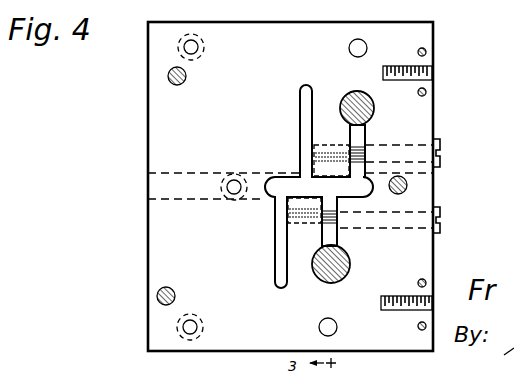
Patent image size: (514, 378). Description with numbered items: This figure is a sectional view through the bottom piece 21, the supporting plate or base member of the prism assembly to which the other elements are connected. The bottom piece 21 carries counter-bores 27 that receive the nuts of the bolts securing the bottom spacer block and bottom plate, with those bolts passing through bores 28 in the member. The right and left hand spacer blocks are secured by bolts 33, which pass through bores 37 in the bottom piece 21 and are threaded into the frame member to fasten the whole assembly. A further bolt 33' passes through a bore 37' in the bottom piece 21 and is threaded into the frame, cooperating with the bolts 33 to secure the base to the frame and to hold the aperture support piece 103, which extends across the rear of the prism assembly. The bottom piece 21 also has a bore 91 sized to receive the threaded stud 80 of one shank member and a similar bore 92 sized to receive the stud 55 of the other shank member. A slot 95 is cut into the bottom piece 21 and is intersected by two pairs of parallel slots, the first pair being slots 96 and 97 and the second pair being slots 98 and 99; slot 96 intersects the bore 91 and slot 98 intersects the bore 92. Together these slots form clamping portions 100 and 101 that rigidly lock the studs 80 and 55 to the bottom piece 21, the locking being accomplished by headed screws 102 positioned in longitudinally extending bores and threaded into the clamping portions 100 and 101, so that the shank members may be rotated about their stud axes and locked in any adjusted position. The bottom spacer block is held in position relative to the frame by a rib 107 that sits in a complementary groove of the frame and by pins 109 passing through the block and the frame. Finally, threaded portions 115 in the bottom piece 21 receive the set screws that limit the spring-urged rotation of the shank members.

The bottom piece 21 is at (435, 40).
The counter-bores 27 is at (206, 44).
The bores 28 is at (191, 40).
The bolts 33 is at (169, 185).
The bores 37 is at (142, 200).
The bolt 33' is at (429, 185).
The bore 37' is at (413, 227).
The stud 55 is at (351, 91).
The threaded stud 80 is at (321, 278).
The bore 91 is at (349, 266).
The bore 92 is at (374, 106).
The slot 95 is at (282, 179).
The slot 96 is at (337, 236).
The slot 97 is at (275, 248).
The slot 98 is at (362, 134).
The slot 99 is at (300, 101).
The clamping portion 100 is at (288, 204).
The clamping portion 101 is at (320, 170).
The headed screws 102 is at (441, 141).
The aperture support piece 103 is at (427, 92).
The rib 107 is at (165, 172).
The pins 109 is at (362, 40).
The threaded portions 115 is at (433, 72).